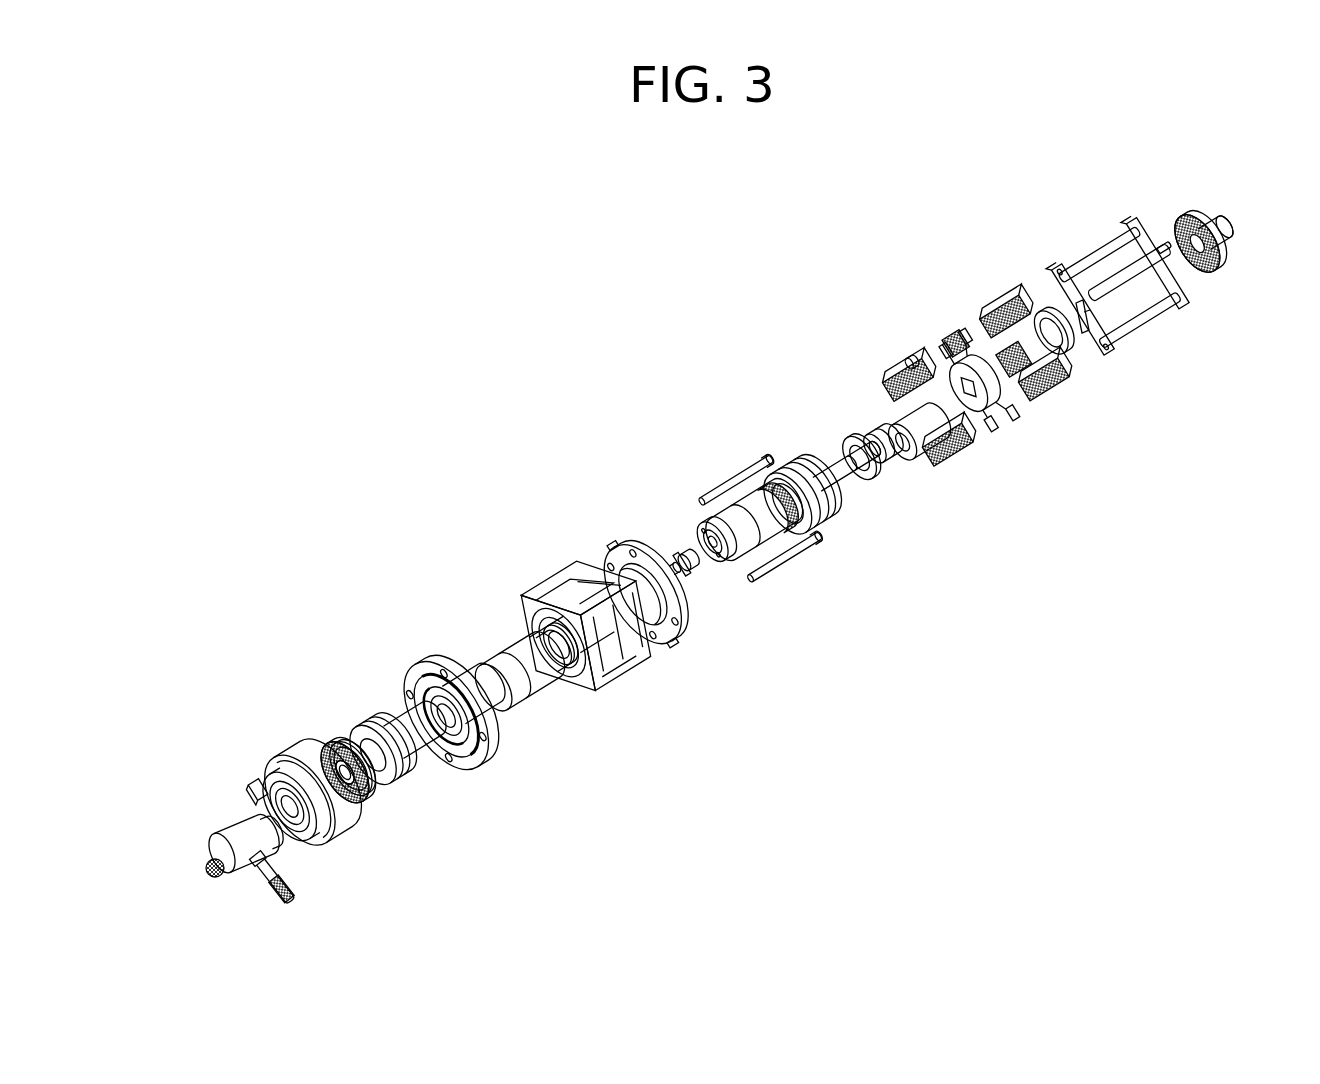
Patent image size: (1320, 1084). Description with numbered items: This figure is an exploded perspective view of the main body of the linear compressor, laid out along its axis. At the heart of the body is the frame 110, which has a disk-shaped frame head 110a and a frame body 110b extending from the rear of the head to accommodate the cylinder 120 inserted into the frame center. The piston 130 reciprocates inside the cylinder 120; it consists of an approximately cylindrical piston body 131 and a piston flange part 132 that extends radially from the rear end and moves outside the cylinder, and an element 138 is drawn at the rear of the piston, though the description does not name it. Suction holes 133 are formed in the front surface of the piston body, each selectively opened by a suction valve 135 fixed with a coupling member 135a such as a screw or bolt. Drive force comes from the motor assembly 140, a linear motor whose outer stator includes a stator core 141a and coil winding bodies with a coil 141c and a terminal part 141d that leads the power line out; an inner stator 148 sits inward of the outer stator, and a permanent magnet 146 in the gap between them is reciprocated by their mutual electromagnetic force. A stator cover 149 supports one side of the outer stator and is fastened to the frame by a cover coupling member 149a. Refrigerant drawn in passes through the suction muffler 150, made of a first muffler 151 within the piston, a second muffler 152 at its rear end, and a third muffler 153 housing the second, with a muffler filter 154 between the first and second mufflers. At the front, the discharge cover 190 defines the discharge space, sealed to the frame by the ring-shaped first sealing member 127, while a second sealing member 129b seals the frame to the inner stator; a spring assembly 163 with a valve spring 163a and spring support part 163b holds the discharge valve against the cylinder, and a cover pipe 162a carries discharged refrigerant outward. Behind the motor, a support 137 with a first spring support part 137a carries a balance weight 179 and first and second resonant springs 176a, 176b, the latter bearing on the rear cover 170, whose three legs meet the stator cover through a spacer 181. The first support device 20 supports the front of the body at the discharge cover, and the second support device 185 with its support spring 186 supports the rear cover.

The first support device 20 is at (207, 828).
The frame 110 is at (470, 788).
The frame head 110a is at (497, 706).
The frame body 110b is at (512, 685).
The cylinder 120 is at (393, 727).
The first sealing member 127 is at (350, 738).
The second sealing member 129b is at (557, 668).
The piston 130 is at (771, 521).
The piston body 131 is at (715, 492).
The piston flange part 132 is at (770, 522).
The suction holes 133 is at (704, 566).
The suction valve 135 is at (665, 513).
The coupling member 135a is at (678, 566).
The support 137 is at (972, 370).
The first spring support part 137a is at (940, 342).
The end cap 138 is at (798, 460).
The motor assembly 140 is at (609, 651).
The stator core 141a is at (630, 633).
The coil 141c is at (627, 670).
The terminal part 141d is at (570, 642).
The permanent magnet 146 is at (808, 538).
The inner stator 148 is at (510, 648).
The stator cover 149 is at (668, 527).
The cover coupling member 149a is at (741, 472).
The suction muffler 150 is at (880, 467).
The first muffler 151 is at (845, 480).
The second muffler 152 is at (877, 432).
The third muffler 153 is at (918, 440).
The muffler filter 154 is at (843, 436).
The cover pipe 162a is at (270, 780).
The spring assembly 163 is at (363, 803).
The valve spring 163a is at (336, 758).
The spring support part 163b is at (365, 815).
The rear cover 170 is at (1133, 335).
The first resonant springs 176a is at (903, 362).
The second resonant springs 176b is at (1000, 297).
The balance weight 179 is at (1047, 307).
The spacer 181 is at (1083, 300).
The second support device 185 is at (1218, 255).
The support spring 186 is at (1180, 210).
The discharge cover 190 is at (306, 762).